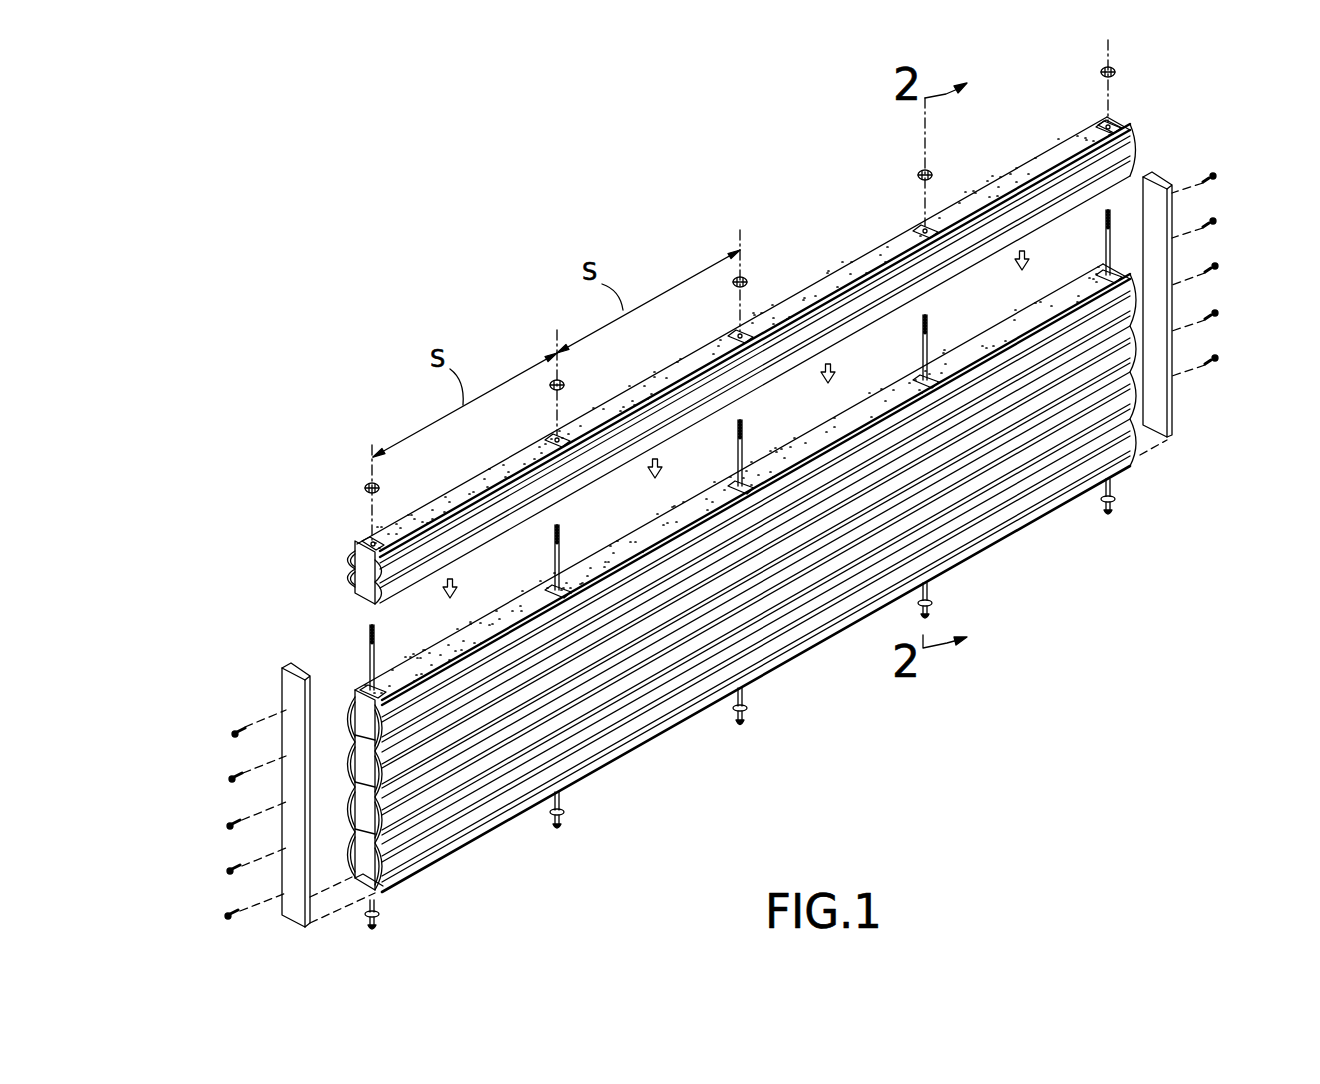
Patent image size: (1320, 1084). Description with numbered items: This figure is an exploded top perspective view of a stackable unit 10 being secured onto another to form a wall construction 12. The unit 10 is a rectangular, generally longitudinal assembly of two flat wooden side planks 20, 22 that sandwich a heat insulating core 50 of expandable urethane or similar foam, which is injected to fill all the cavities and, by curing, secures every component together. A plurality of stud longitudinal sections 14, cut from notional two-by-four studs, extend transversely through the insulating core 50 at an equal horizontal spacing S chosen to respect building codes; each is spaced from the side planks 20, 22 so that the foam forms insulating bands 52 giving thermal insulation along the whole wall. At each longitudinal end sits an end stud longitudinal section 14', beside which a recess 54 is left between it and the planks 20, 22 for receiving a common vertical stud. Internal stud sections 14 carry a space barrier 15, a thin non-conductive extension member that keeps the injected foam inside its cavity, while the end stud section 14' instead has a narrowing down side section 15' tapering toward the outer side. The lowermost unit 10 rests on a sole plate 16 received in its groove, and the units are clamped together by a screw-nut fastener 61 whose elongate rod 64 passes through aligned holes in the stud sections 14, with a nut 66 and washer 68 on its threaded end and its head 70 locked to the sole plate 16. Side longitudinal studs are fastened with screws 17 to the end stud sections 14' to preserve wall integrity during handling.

The stackable unit 10 is at (260, 605).
The wall construction 12 is at (862, 772).
The stud longitudinal section 14 is at (833, 284).
The end stud longitudinal section 14' is at (747, 337).
The space barrier 15 is at (833, 434).
The narrowing down side section 15' is at (349, 661).
The sole plate 16 is at (357, 893).
The screws 17 is at (228, 779).
The first side plank 20 is at (610, 394).
The second side plank 22 is at (950, 258).
The heat insulating core 50 is at (1020, 173).
The insulating band 52 is at (920, 378).
The recess 54 is at (373, 590).
The screw-nut fastener 61 is at (575, 821).
The elongate rod 64 is at (744, 450).
The nut 66 is at (746, 278).
The washer 68 is at (748, 708).
The head 70 is at (738, 725).